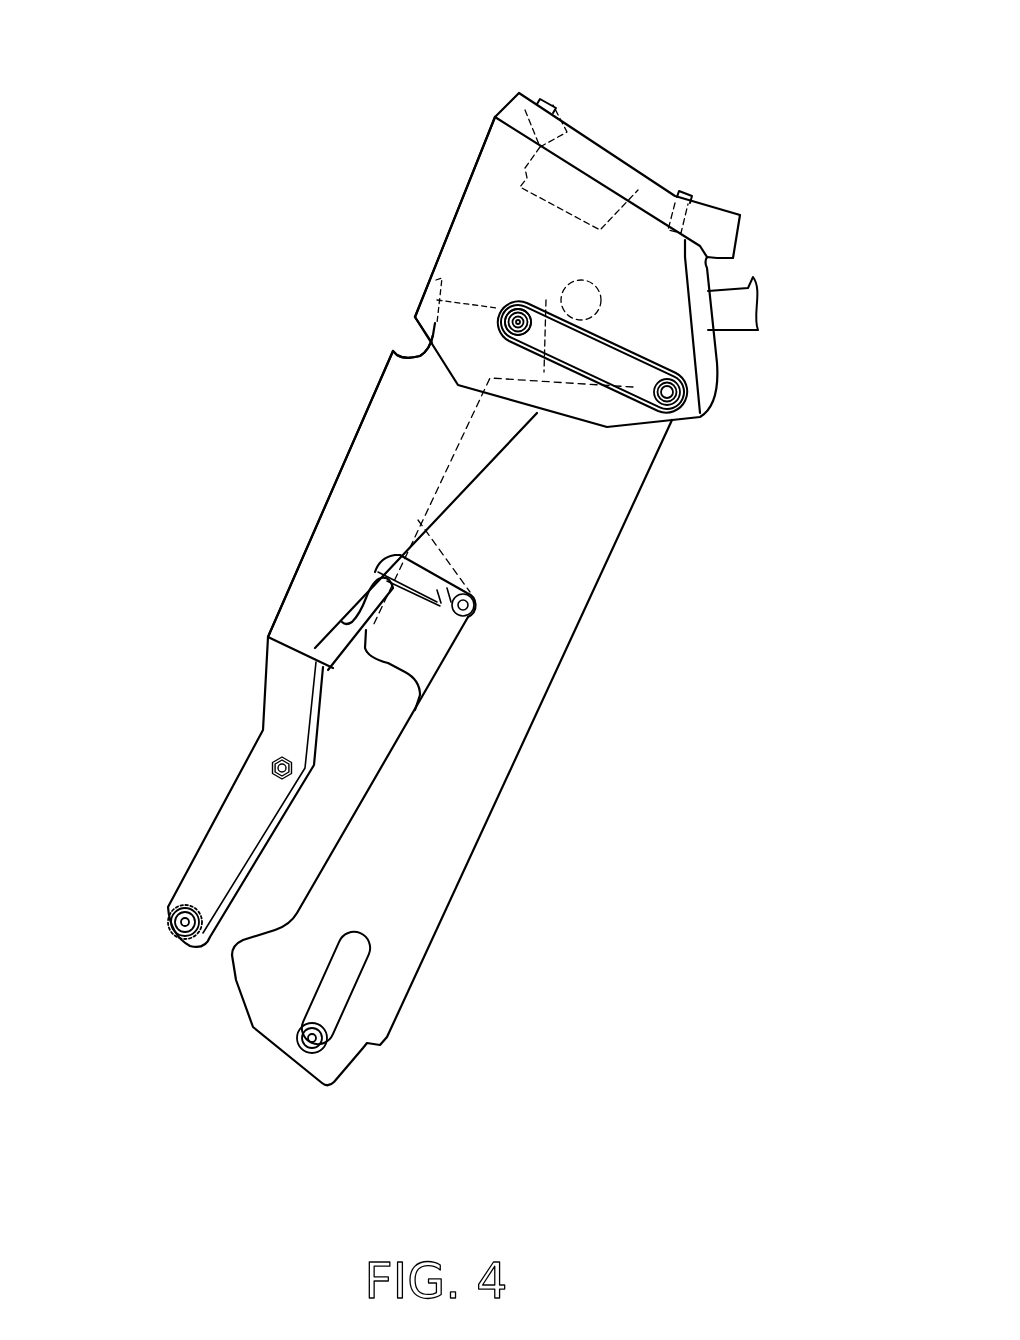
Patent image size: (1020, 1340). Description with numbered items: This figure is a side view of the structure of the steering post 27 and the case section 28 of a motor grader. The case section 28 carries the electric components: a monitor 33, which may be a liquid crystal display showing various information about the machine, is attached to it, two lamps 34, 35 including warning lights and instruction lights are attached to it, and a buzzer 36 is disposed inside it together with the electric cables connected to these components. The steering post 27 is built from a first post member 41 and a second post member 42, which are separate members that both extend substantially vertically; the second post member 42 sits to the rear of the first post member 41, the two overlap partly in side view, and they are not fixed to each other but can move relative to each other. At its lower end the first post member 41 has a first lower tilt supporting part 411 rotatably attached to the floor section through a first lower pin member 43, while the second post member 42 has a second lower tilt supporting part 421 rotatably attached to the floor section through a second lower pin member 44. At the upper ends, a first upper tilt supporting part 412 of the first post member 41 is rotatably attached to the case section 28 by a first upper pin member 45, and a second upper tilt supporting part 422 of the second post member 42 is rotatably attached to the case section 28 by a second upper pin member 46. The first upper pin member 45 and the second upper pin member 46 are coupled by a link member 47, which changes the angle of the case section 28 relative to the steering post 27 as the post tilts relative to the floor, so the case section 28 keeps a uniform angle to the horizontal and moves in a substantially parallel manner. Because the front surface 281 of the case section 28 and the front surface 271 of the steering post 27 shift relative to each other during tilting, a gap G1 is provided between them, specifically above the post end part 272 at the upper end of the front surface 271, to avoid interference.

The steering post 27 is at (341, 671).
The front surface of the steering post 271 is at (328, 482).
The post end part 272 is at (392, 347).
The case section 28 is at (405, 193).
The front surface of the case section 281 is at (428, 238).
The gap G1 is at (412, 330).
The monitor 33 is at (640, 190).
The lamp 34 is at (521, 90).
The lamp 35 is at (707, 213).
The buzzer 36 is at (607, 302).
The first post member 41 is at (365, 418).
The first lower tilt supporting part 411 is at (167, 931).
The first upper tilt supporting part 412 is at (510, 293).
The second post member 42 is at (602, 527).
The second lower tilt supporting part 421 is at (300, 1050).
The second upper tilt supporting part 422 is at (683, 399).
The first lower pin member 43 is at (190, 938).
The second lower pin member 44 is at (330, 1040).
The first upper pin member 45 is at (540, 307).
The second upper pin member 46 is at (680, 385).
The link member 47 is at (618, 405).